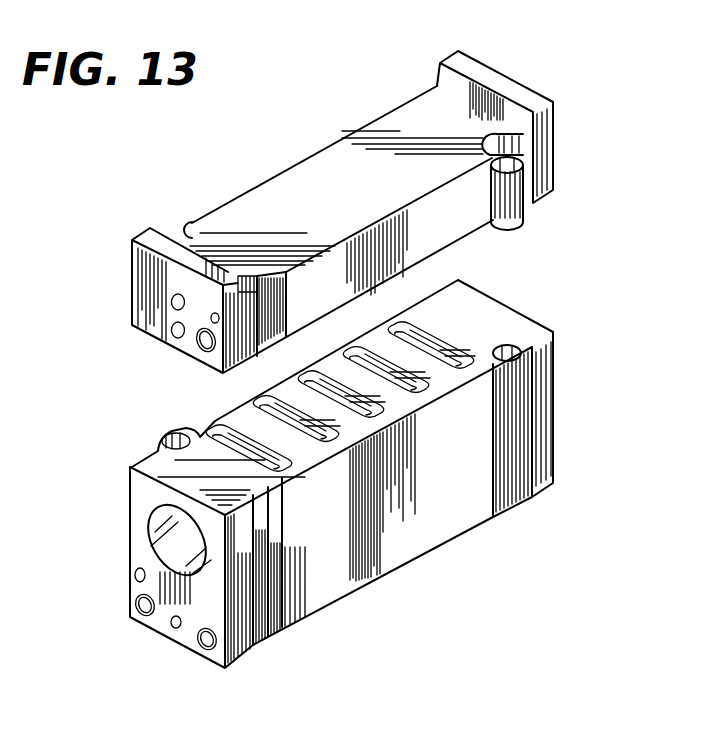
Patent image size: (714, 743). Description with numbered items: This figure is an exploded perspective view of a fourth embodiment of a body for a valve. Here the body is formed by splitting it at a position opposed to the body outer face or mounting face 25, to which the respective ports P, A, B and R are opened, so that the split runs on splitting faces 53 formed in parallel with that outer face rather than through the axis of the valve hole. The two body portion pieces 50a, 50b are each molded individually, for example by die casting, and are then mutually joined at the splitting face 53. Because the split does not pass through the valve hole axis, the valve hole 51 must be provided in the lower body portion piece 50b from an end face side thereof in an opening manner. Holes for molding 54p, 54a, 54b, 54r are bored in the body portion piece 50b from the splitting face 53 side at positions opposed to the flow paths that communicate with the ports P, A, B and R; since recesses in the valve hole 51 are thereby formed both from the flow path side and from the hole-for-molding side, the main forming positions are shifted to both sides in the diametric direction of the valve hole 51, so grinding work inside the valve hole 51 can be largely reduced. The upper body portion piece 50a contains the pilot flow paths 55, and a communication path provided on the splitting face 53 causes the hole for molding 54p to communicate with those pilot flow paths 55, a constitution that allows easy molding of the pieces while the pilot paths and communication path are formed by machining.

The body outer face or mounting face 25 is at (468, 532).
The body portion piece 50a is at (328, 163).
The body portion piece 50b is at (423, 542).
The valve hole 51 is at (170, 543).
The splitting face 53 is at (540, 205).
The hole for molding 54a is at (250, 404).
The hole for molding 54b is at (363, 347).
The hole for molding 54p is at (296, 376).
The hole for molding 54r is at (437, 333).
The pilot flow paths 55 is at (172, 330).